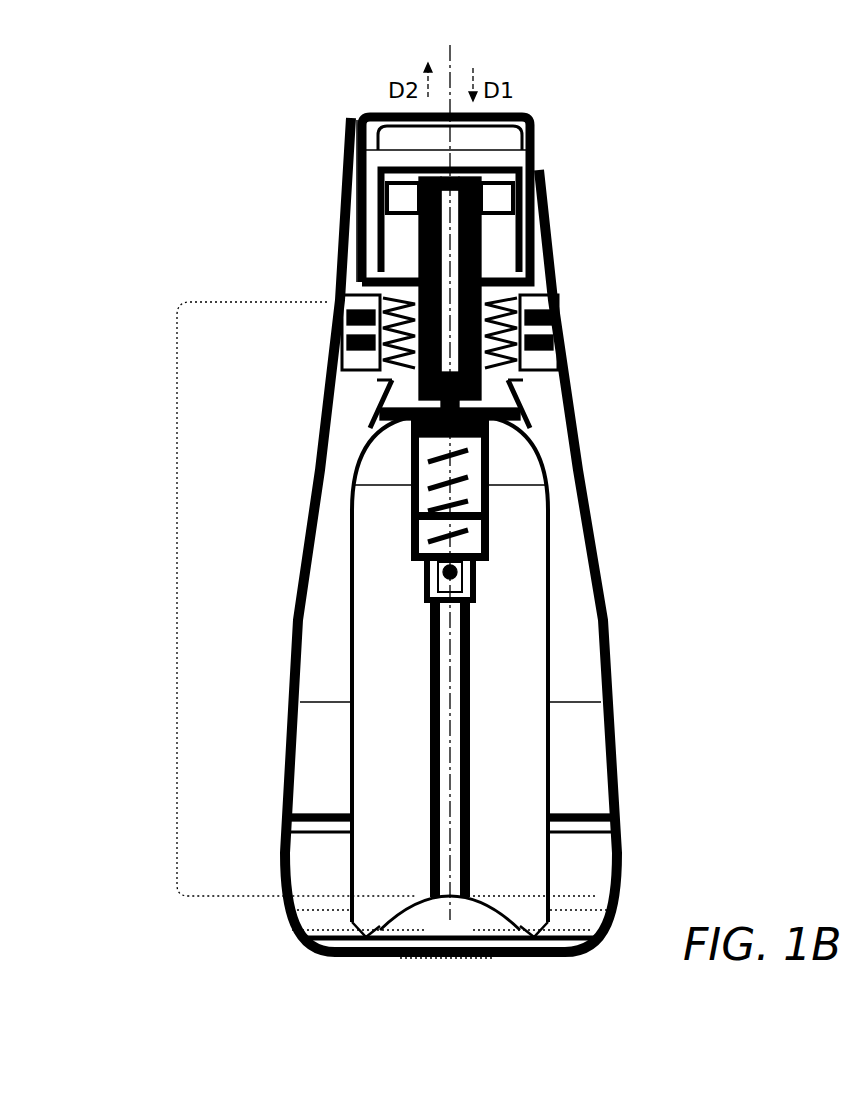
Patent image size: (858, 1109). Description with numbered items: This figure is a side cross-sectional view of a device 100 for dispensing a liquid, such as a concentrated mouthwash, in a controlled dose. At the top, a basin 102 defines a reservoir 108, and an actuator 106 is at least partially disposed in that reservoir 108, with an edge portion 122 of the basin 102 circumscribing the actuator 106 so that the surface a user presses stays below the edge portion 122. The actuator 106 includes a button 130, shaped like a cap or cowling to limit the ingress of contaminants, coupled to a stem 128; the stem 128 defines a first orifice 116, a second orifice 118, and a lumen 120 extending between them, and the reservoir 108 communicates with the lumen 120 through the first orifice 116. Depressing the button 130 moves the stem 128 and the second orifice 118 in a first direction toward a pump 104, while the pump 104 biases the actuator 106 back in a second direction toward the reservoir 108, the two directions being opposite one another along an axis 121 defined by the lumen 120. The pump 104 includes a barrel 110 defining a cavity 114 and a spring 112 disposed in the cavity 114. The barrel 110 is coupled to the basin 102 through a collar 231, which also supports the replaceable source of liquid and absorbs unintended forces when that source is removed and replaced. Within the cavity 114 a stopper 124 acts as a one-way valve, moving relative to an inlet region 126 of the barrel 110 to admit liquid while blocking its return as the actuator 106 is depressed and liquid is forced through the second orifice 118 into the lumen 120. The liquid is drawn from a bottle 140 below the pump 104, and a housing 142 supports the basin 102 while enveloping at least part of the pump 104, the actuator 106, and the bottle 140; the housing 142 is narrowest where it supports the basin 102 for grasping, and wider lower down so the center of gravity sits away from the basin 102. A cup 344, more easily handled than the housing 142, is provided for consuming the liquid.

The device 100 is at (790, 144).
The basin 102 is at (548, 262).
The pump 104 is at (176, 596).
The actuator 106 is at (412, 205).
The reservoir 108 is at (398, 248).
The barrel 110 is at (487, 463).
The spring 112 is at (425, 461).
The cavity 114 is at (430, 496).
The first orifice 116 is at (447, 202).
The second orifice 118 is at (447, 407).
The lumen 120 is at (457, 258).
The axis 121 is at (452, 72).
The edge portion 122 is at (355, 113).
The stopper 124 is at (477, 573).
The inlet region 126 is at (477, 623).
The stem 128 is at (467, 247).
The button 130 is at (350, 157).
The bottle 140 is at (350, 643).
The housing 142 is at (615, 718).
The collar 231 is at (350, 335).
The cup 344 is at (540, 118).